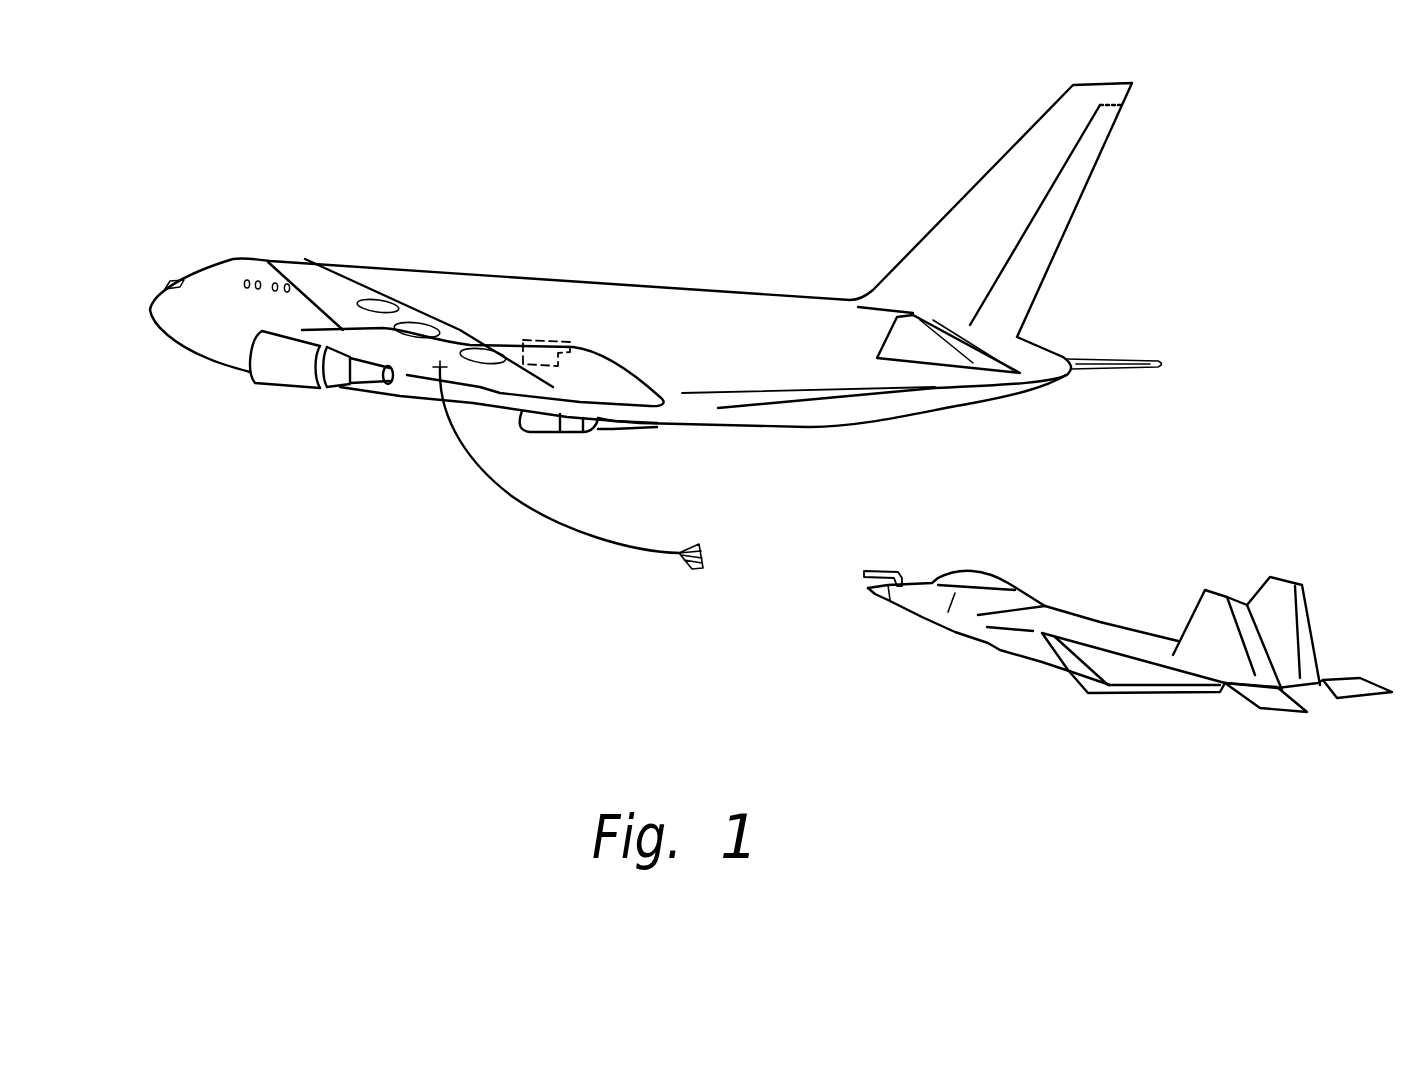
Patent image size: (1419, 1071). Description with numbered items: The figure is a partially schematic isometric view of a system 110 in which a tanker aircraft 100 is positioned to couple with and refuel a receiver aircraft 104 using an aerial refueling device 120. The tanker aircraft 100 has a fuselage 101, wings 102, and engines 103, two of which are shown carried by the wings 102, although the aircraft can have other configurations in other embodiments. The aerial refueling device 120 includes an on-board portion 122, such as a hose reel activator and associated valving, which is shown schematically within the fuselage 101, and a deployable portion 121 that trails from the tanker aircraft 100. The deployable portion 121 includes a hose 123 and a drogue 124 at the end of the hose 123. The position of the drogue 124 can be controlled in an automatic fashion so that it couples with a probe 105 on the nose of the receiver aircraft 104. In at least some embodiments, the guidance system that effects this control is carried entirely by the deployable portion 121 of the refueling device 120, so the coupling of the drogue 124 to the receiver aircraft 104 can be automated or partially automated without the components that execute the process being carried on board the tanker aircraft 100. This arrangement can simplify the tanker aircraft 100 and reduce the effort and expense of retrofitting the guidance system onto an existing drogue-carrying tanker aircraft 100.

The tanker aircraft 100 is at (771, 425).
The fuselage 101 is at (597, 298).
The wings 102 is at (333, 285).
The engines 103 is at (263, 355).
The receiver aircraft 104 is at (1128, 629).
The probe 105 is at (883, 568).
The system 110 is at (656, 372).
The aerial refueling device 120 is at (581, 408).
The deployable portion 121 is at (472, 499).
The on-board portion 122 is at (587, 351).
The hose 123 is at (585, 527).
The drogue 124 is at (694, 570).